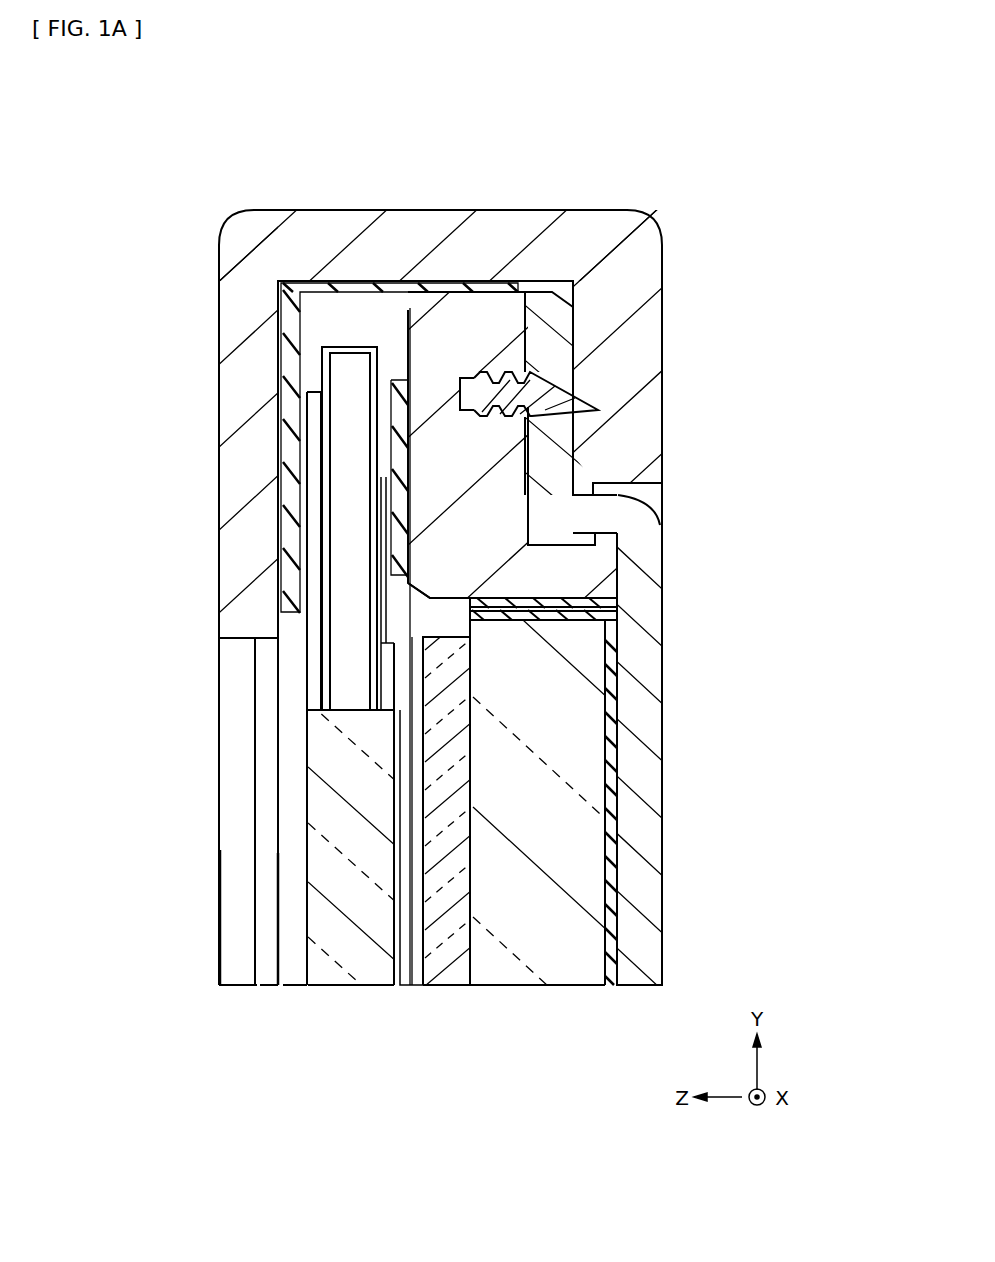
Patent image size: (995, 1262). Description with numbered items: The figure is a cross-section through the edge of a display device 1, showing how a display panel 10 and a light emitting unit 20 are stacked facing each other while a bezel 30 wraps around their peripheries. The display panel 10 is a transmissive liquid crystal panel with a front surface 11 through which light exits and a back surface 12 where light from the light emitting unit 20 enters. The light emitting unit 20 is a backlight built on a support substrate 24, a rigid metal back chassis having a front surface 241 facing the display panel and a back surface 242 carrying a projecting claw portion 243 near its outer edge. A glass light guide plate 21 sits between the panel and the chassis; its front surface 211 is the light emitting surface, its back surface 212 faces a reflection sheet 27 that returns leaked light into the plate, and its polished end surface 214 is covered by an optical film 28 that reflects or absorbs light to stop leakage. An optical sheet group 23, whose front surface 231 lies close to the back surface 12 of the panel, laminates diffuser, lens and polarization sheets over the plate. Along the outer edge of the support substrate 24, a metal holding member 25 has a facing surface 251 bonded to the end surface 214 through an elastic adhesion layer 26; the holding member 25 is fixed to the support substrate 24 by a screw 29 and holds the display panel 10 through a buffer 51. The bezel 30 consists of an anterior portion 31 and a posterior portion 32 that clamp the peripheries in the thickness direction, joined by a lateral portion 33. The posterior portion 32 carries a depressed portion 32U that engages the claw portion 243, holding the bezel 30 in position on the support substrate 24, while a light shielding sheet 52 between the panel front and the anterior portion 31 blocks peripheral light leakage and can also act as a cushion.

The display device 1 is at (712, 170).
The display panel 10 is at (352, 987).
The front surface 11 is at (308, 790).
The back surface 12 is at (397, 798).
The light emitting unit 20 is at (430, 1045).
The light guide plate 21 is at (541, 987).
The optical sheet group 23 is at (452, 987).
The support substrate 24 is at (655, 987).
The holding member 25 is at (607, 576).
The adhesion layer 26 is at (607, 607).
The reflection sheet 27 is at (611, 987).
The optical film 28 is at (607, 619).
The screw 29 is at (562, 375).
The bezel 30 is at (233, 137).
The anterior portion 31 is at (248, 318).
The posterior portion 32 is at (621, 310).
The depressed portion 32U is at (598, 396).
The lateral portion 33 is at (441, 210).
The buffer 51 is at (300, 440).
The light shielding sheet 52 is at (292, 508).
The front surface 211 is at (470, 857).
The back surface 212 is at (607, 853).
The end surface 214 is at (523, 598).
The front surface 231 is at (396, 688).
The front surface 241 is at (605, 913).
The back surface 242 is at (660, 902).
The claw portion 243 is at (600, 408).
The facing surface 251 is at (487, 622).